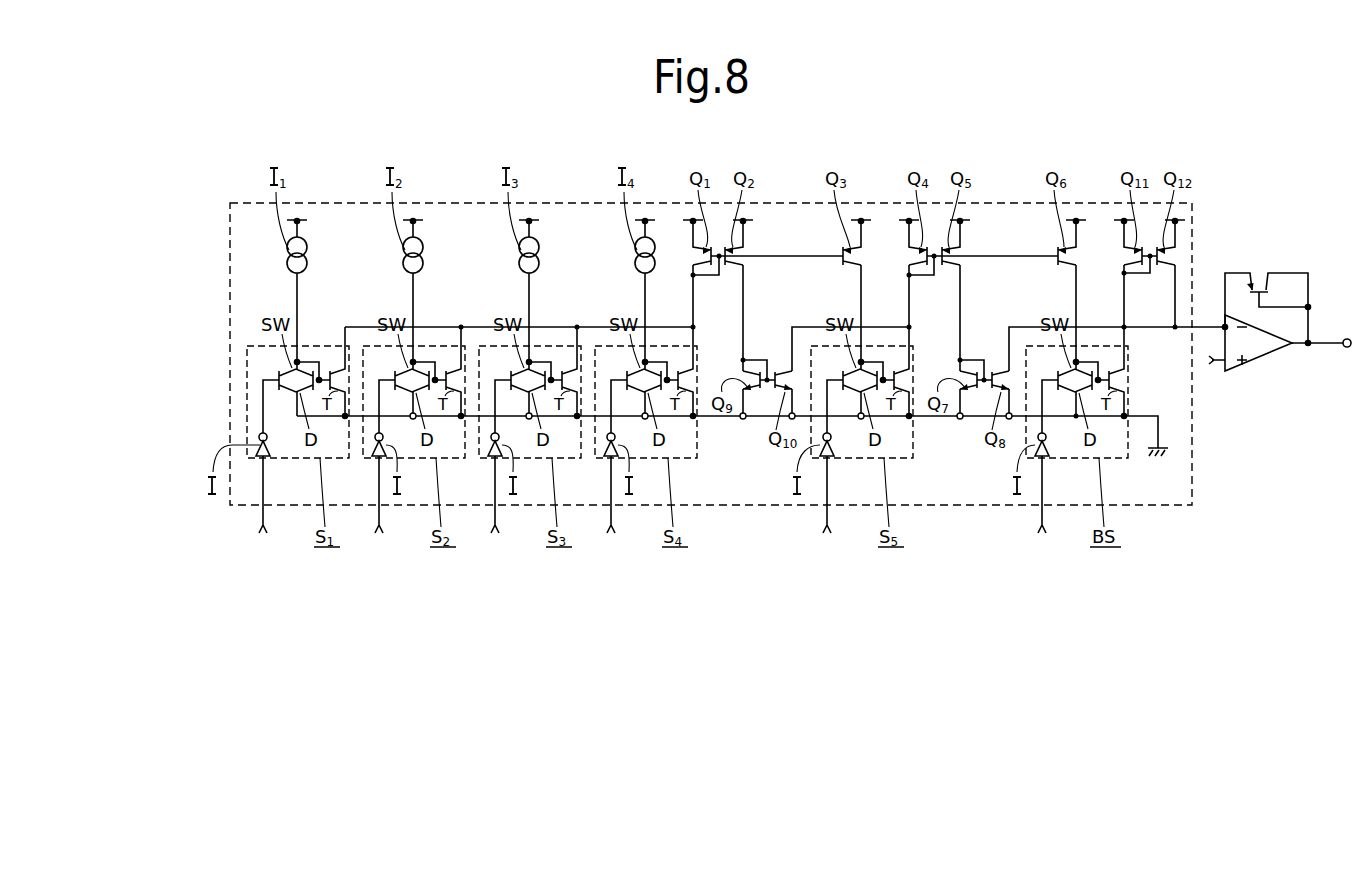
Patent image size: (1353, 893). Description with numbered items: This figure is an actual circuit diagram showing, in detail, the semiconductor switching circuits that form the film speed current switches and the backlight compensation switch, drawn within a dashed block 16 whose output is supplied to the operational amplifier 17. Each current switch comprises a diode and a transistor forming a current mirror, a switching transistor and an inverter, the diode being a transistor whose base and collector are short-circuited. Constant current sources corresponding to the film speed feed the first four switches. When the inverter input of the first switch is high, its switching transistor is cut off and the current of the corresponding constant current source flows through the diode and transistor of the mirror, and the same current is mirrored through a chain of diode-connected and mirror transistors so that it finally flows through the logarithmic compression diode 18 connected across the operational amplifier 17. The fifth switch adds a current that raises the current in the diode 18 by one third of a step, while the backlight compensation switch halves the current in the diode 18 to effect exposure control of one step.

The current switch circuit block 16 is at (1162, 505).
The operational amplifier 17 is at (1269, 361).
The logarithmic compression diode 18 is at (1262, 290).